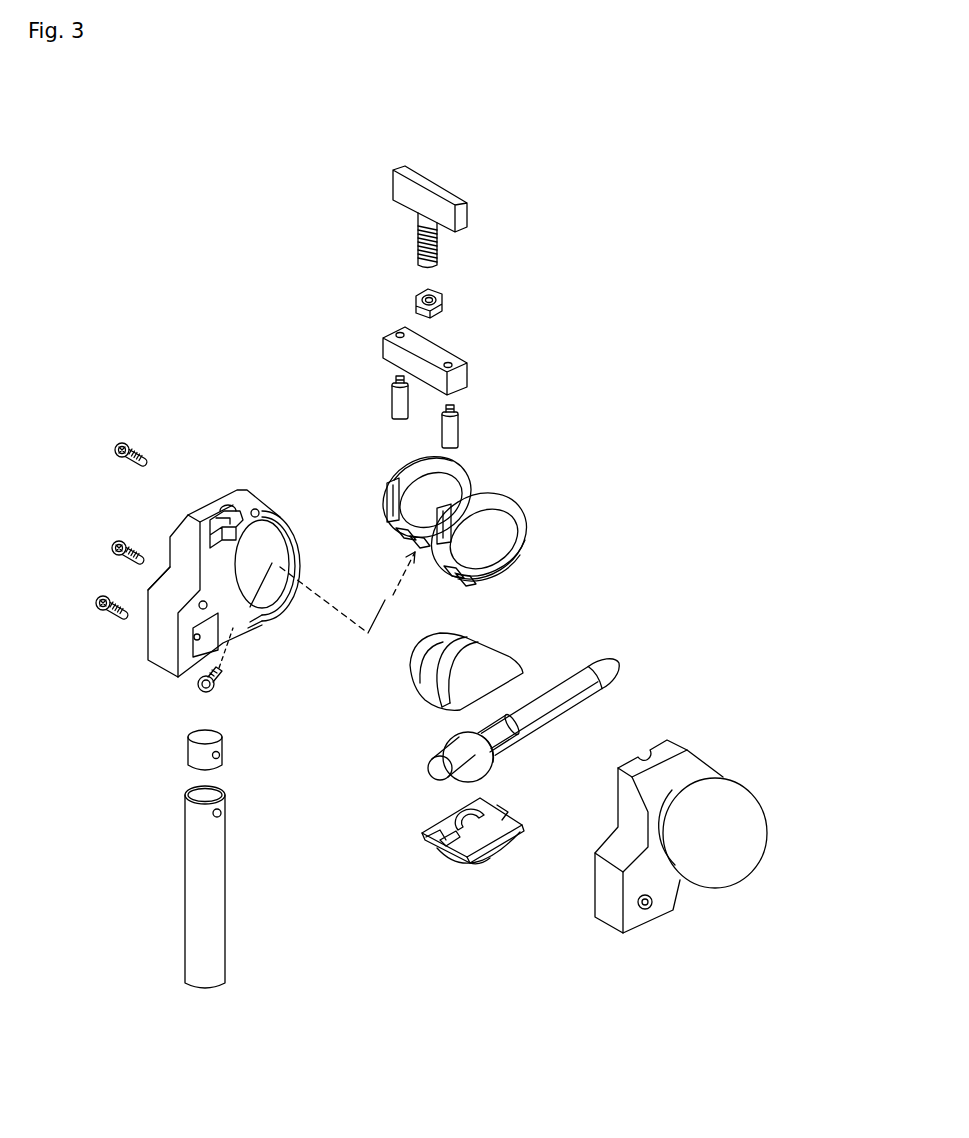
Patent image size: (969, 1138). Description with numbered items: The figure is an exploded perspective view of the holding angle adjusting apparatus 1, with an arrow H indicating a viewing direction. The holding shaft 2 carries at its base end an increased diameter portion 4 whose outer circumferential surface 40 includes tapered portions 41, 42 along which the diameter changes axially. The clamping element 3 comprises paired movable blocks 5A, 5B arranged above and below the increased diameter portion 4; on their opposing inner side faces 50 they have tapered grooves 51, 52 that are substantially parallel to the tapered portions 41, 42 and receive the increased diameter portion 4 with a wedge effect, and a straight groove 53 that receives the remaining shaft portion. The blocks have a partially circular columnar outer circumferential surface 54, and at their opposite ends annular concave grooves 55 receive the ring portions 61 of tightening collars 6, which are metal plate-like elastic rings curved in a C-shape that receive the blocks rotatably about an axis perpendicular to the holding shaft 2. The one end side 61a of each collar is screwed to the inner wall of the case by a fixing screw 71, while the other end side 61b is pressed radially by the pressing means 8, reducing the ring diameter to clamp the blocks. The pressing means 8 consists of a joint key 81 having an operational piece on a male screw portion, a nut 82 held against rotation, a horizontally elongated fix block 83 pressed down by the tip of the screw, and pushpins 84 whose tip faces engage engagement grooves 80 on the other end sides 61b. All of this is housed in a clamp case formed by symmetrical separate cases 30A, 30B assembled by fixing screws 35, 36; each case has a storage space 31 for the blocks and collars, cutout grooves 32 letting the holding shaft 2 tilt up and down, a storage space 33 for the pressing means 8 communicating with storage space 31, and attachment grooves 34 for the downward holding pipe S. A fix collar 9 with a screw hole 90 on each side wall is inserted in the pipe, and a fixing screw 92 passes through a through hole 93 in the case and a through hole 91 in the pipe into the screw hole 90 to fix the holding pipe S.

The holding angle adjusting apparatus 1 is at (645, 187).
The holding shaft 2 is at (590, 663).
The clamping element 3 is at (273, 411).
The increased diameter portion 4 is at (500, 703).
The movable block 5A is at (435, 782).
The movable block 5B is at (450, 855).
The tightening collar 6 is at (443, 524).
The pressing means 8 is at (318, 246).
The fix collar 9 is at (208, 753).
The separate case 30A is at (380, 711).
The separate case 30B is at (712, 778).
The storage space 31 is at (275, 535).
The cutout groove 32 is at (300, 550).
The storage space 33 is at (238, 505).
The attachment groove 34 is at (172, 662).
The fixing screw 35 is at (116, 446).
The fixing screw 36 is at (114, 543).
The outer circumferential surface 40 is at (493, 758).
The tapered portion 41 is at (497, 722).
The tapered portion 42 is at (434, 750).
The inner side face 50 is at (430, 831).
The tapered groove 51 is at (465, 820).
The tapered groove 52 is at (447, 850).
The straight groove 53 is at (430, 845).
The outer circumferential surface 54 is at (425, 638).
The annular concave groove 55 is at (478, 660).
The ring portion 61 is at (396, 478).
The one end side 61a is at (397, 533).
The other end side 61b is at (388, 510).
The fixing screw 71 is at (214, 691).
The engagement groove 80 is at (430, 505).
The joint key 81 is at (430, 183).
The nut 82 is at (440, 298).
The fix block 83 is at (442, 357).
The pushpin 84 is at (391, 401).
The screw hole 90 is at (221, 757).
The through hole 91 is at (222, 815).
The fixing screw 92 is at (98, 598).
The through hole 93 is at (192, 635).
The hand side H is at (566, 146).
The holding pipe S is at (205, 887).